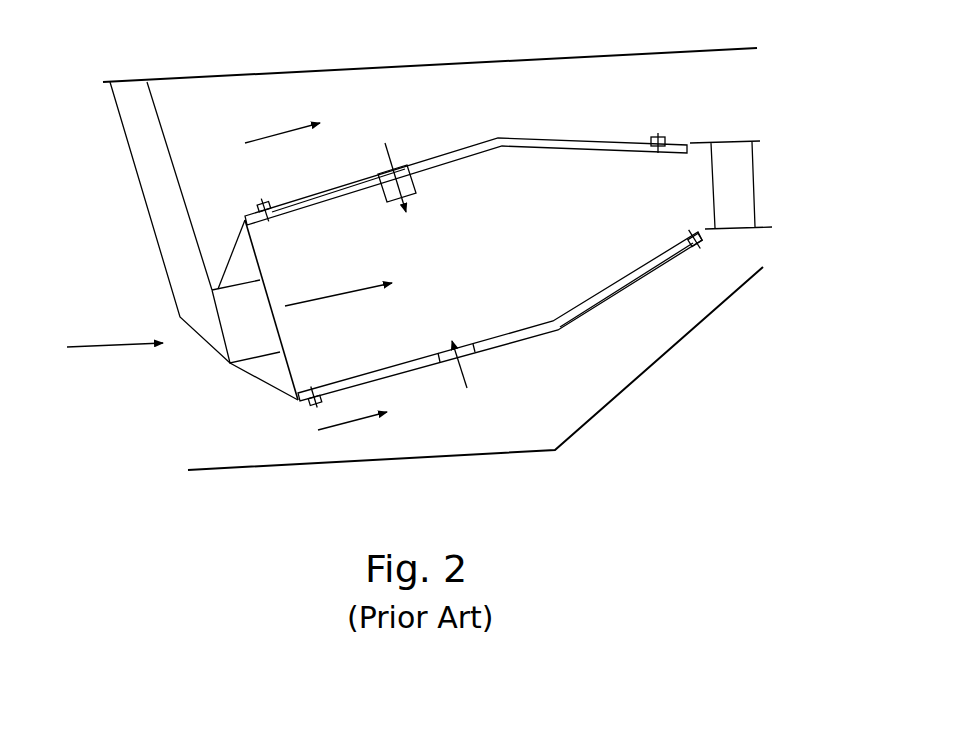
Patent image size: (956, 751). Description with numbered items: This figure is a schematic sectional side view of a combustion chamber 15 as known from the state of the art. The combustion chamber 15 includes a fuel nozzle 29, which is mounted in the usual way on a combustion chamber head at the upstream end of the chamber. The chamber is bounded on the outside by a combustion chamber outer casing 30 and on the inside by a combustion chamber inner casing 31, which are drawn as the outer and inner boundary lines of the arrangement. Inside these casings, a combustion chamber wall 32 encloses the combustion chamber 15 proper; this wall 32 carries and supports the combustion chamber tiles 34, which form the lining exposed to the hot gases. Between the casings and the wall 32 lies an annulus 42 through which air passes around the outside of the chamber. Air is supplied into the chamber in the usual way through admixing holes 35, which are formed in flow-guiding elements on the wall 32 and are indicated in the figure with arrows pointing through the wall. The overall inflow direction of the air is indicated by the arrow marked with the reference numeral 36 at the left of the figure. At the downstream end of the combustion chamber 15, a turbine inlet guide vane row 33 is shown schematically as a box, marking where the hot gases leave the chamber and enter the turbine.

The combustion chamber 15 is at (533, 250).
The fuel nozzle 29 is at (233, 325).
The combustion chamber outer casing 30 is at (565, 58).
The combustion chamber inner casing 31 is at (448, 457).
The combustion chamber wall 32 is at (253, 217).
The turbine inlet guide vane row 33 is at (747, 197).
The combustion chamber tile 34 is at (450, 153).
The admixing hole 35 is at (385, 172).
The inflow direction 36 is at (137, 345).
The annulus 42 is at (607, 97).